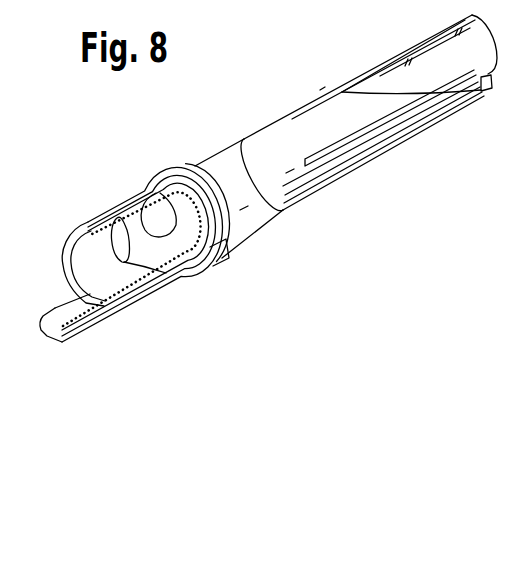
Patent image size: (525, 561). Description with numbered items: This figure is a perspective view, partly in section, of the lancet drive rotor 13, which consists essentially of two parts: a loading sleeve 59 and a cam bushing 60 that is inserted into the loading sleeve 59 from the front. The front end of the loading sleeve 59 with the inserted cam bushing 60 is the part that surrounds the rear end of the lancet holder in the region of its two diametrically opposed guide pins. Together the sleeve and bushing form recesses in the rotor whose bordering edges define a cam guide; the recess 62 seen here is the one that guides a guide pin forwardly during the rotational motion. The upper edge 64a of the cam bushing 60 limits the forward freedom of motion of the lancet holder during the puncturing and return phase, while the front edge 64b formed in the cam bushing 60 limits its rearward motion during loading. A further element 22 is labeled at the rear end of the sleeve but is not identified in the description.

The loading sleeve 59 is at (320, 115).
The lancet drive rotor 13 is at (311, 163).
The end tab 22 is at (479, 91).
The recess 62 is at (157, 248).
The upper edge 64a is at (116, 217).
The front edge 64b is at (143, 192).
The cam bushing 60 is at (113, 277).